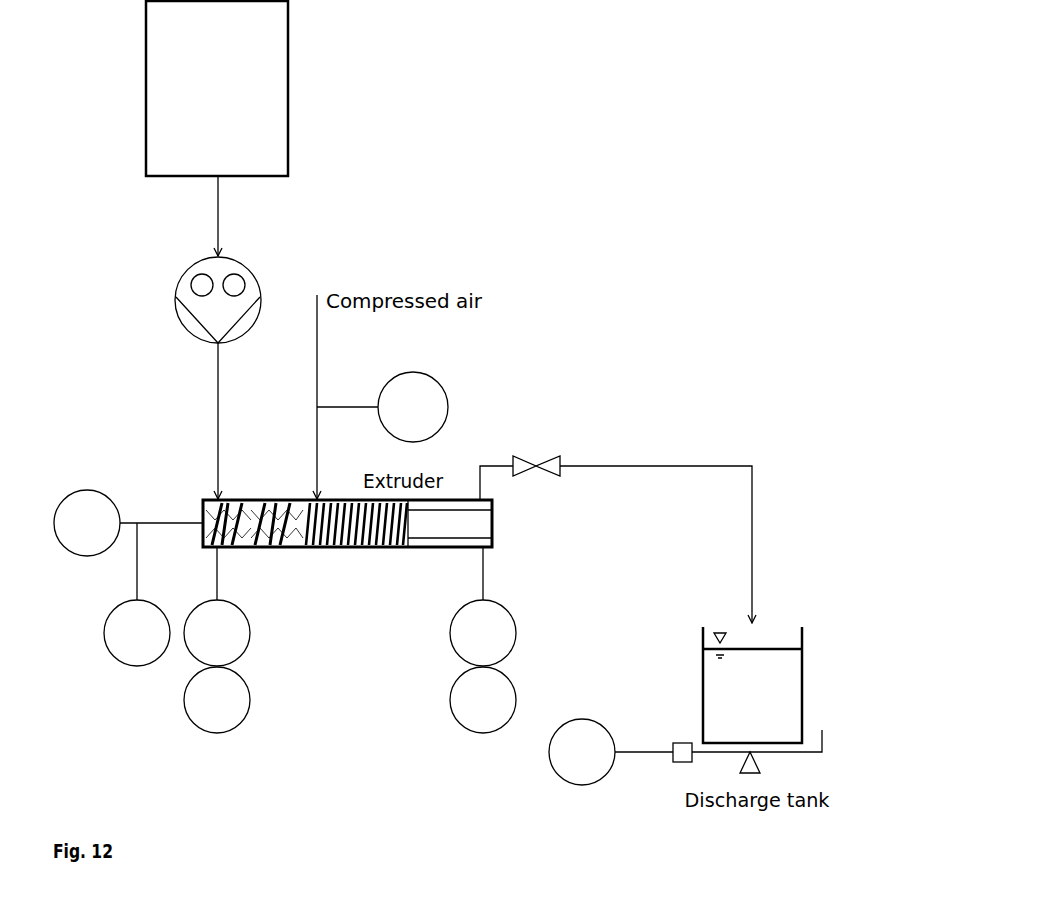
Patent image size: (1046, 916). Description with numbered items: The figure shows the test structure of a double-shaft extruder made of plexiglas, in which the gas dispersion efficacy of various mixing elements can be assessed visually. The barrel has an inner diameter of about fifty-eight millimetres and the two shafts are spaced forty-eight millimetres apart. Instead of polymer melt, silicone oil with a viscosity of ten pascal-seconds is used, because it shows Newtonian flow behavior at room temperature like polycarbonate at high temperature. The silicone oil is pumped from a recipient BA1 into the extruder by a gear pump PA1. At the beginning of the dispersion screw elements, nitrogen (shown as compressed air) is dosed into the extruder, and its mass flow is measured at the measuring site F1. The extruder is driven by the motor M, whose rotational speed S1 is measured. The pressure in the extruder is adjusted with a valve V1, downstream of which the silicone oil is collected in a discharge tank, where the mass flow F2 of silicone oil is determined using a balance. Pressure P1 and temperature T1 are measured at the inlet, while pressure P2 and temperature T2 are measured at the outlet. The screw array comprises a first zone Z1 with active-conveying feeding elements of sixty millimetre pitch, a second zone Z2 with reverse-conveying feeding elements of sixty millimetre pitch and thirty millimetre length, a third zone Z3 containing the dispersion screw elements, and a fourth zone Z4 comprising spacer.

The recipient BA1 is at (217, 88).
The gear pump PA1 is at (186, 300).
The measuring site F1 is at (382, 407).
The valve V1 is at (520, 466).
The motor M is at (128, 523).
The first zone Z1 is at (234, 541).
The second zone Z2 is at (280, 541).
The third zone Z3 is at (356, 541).
The fourth zone Z4 is at (450, 540).
The rotational speed S1 is at (137, 594).
The temperature T1 is at (217, 606).
The pressure P1 is at (217, 700).
The temperature T2 is at (483, 606).
The pressure P2 is at (483, 700).
The mass flow F2 is at (685, 752).